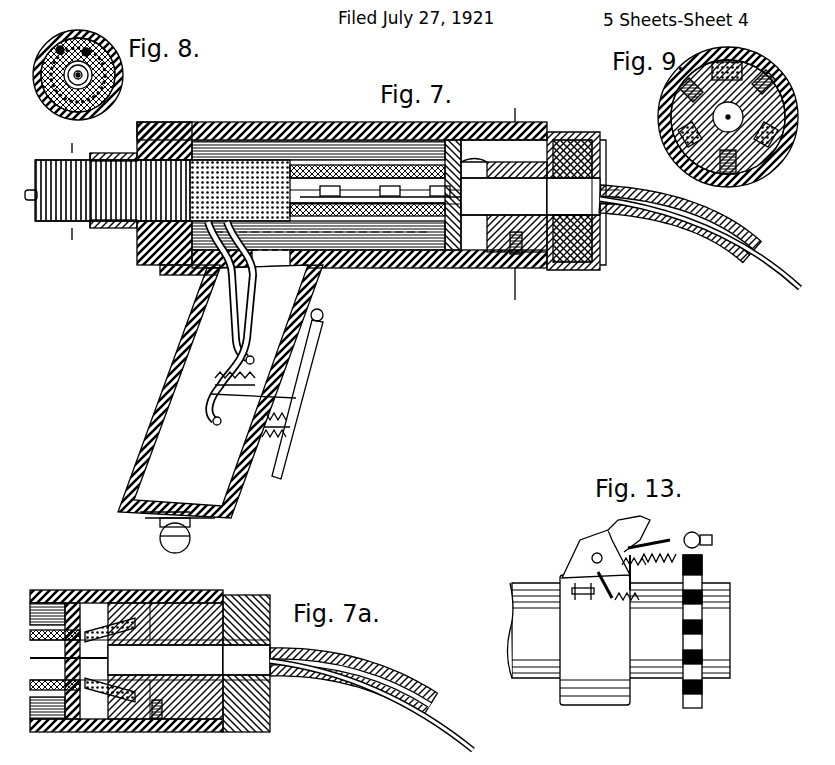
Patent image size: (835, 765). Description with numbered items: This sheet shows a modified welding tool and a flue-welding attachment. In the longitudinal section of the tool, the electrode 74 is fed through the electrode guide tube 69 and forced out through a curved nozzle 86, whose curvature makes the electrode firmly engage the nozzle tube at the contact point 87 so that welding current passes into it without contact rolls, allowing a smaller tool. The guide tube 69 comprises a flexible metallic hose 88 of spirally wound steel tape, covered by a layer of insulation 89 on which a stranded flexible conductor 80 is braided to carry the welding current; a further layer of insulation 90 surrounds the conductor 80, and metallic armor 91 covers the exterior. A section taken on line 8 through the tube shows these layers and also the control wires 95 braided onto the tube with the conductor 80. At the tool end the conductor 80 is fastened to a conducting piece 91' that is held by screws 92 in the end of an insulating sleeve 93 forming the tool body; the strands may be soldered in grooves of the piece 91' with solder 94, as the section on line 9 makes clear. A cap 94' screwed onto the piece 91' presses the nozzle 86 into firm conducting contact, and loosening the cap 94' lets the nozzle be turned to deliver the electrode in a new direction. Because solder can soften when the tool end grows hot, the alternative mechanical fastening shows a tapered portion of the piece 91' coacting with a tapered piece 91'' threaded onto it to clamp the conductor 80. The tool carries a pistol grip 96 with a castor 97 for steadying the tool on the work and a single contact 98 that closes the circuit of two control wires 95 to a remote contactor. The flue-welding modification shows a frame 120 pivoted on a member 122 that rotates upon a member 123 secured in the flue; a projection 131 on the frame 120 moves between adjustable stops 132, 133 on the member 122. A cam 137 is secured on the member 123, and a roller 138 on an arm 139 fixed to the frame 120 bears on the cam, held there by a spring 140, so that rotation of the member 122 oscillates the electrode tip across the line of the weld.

In FIG. 7, the electrode guide tube 69 is at (55, 222).
In FIG. 7, the electrode 74 is at (792, 275).
In FIG. 8, the electrode 74 is at (50, 48).
In FIG. 9, the electrode 74 is at (730, 118).
In FIG. 7, the flexible conductor 80 is at (555, 118).
In FIG. 8, the flexible conductor 80 is at (100, 45).
In FIG. 9, the flexible conductor 80 is at (685, 148).
In FIG. 7A, the flexible conductor 80 is at (86, 590).
In FIG. 7, the nozzle 86 is at (750, 232).
In FIG. 7, the contact point 87 is at (685, 205).
In FIG. 7, the flexible metallic hose 88 is at (455, 252).
In FIG. 8, the flexible metallic hose 88 is at (100, 70).
In FIG. 7, the layer of insulation 89 is at (385, 215).
In FIG. 7, the layer of insulation 90 is at (330, 150).
In FIG. 8, the layer of insulation 90 is at (95, 108).
In FIG. 7, the metallic armor 91 is at (87, 180).
In FIG. 8, the metallic armor 91 is at (111, 77).
In FIG. 7, the conducting piece 91' is at (572, 175).
In FIG. 7A, the conducting piece 91' is at (248, 649).
In FIG. 9, the tapered piece 91'' is at (748, 122).
In FIG. 7A, the tapered piece 91'' is at (154, 643).
In FIG. 7, the screws 92 is at (508, 260).
In FIG. 9, the screws 92 is at (674, 80).
In FIG. 7, the insulating sleeve 93 is at (525, 268).
In FIG. 9, the insulating sleeve 93 is at (764, 65).
In FIG. 7, the solder 94 is at (565, 173).
In FIG. 7, the cap 94' is at (619, 199).
In FIG. 7, the control wires 95 is at (240, 320).
In FIG. 8, the control wires 95 is at (64, 46).
In FIG. 7, the pistol grip 96 is at (240, 492).
In FIG. 7, the castor 97 is at (160, 538).
In FIG. 7, the contact 98 is at (270, 368).
In FIG. 7, the section line 8- 8 is at (78, 192).
In FIG. 7, the section line 9- 9 is at (508, 202).
In FIG. 13, the frame 120 is at (583, 565).
In FIG. 13, the member 122 is at (588, 705).
In FIG. 13, the member 123 is at (720, 588).
In FIG. 13, the projection 131 is at (606, 598).
In FIG. 13, the adjustable stop 132 is at (580, 595).
In FIG. 13, the adjustable stop 133 is at (632, 592).
In FIG. 13, the cam 137 is at (702, 700).
In FIG. 13, the roller 138 is at (702, 538).
In FIG. 13, the arm 139 is at (672, 538).
In FIG. 13, the spring 140 is at (630, 610).